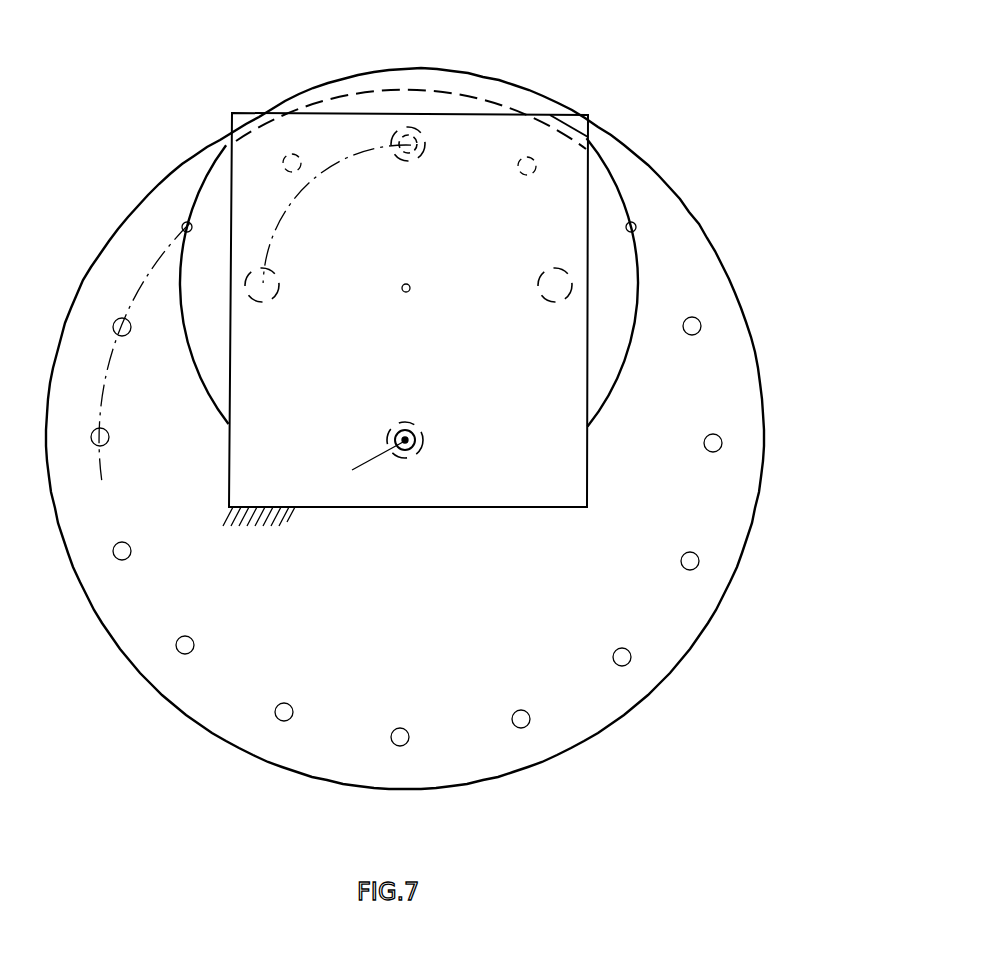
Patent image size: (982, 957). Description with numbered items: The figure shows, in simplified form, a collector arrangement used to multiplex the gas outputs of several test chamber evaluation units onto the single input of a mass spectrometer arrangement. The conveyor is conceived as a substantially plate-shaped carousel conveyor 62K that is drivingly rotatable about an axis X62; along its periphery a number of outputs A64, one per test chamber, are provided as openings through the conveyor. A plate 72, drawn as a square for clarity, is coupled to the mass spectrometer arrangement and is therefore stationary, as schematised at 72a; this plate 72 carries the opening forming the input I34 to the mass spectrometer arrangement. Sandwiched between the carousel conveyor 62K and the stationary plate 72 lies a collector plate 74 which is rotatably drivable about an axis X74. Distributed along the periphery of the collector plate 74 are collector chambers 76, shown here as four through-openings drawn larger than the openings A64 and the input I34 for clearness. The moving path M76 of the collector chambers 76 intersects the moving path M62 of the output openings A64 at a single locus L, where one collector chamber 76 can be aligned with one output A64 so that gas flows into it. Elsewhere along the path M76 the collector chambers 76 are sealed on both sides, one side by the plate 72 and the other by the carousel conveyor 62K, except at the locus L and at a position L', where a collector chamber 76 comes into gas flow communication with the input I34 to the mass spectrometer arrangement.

The carousel conveyor 62K is at (763, 518).
The collector plate 74 is at (637, 264).
The plate 72 is at (590, 192).
The stationary mounting of the plate 72a is at (259, 533).
The collector chambers 76 is at (395, 135).
The locus L is at (422, 145).
The moving path of the collector chambers M76 is at (337, 214).
The axis X74 is at (402, 292).
The axis X62 is at (402, 438).
The position L' is at (417, 440).
The input to the mass spectrometer arrangement I34 is at (369, 473).
The moving path of the output openings M62 is at (146, 350).
The outputs of the test chamber evaluation units A64 is at (277, 715).